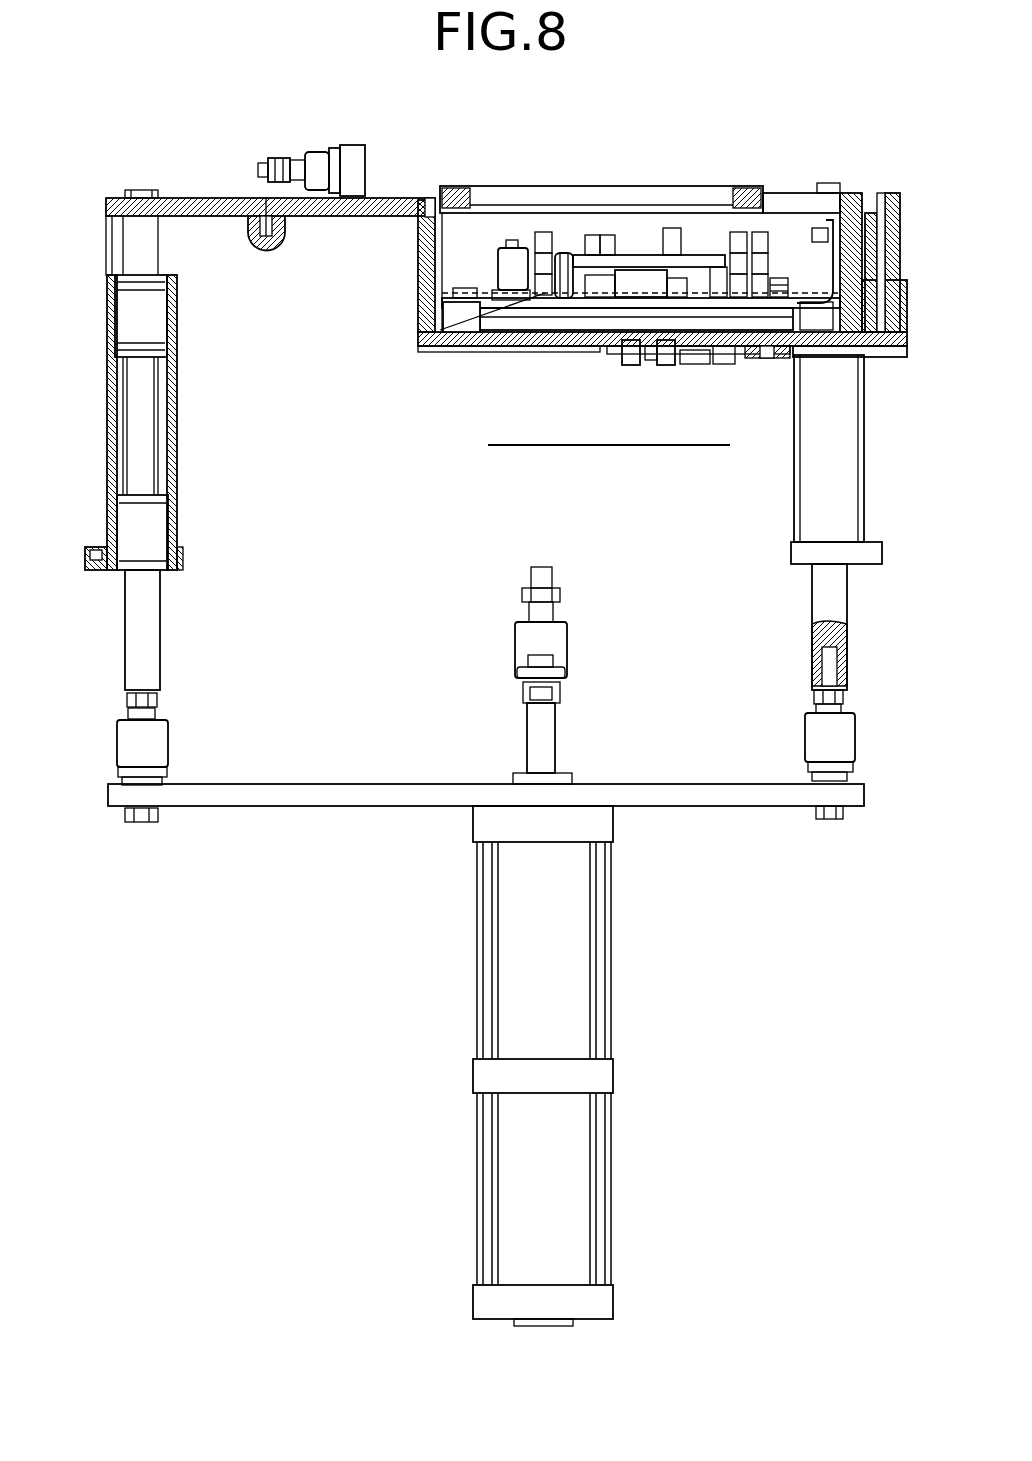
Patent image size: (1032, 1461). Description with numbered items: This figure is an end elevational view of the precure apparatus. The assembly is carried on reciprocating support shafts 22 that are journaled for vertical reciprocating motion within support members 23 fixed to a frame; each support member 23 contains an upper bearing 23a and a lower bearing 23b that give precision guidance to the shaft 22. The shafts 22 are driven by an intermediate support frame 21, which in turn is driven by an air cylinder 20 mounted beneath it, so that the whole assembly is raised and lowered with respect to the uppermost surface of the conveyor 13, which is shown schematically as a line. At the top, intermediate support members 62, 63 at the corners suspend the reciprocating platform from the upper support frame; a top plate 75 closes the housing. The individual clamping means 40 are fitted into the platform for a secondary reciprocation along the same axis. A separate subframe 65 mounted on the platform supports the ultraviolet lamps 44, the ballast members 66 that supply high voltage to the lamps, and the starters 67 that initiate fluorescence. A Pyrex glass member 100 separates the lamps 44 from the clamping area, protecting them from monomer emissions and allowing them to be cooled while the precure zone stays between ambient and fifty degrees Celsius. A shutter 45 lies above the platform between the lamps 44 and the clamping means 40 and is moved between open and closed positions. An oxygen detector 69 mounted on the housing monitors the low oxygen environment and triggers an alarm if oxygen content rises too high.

The conveyor 13 is at (613, 445).
The air cylinder 20 is at (600, 977).
The intermediate support frame 21 is at (312, 790).
The reciprocating support shafts 22 is at (148, 629).
The support members 23 is at (848, 437).
The upper bearing 23a is at (130, 312).
The lower bearing 23b is at (143, 520).
The clamping means 40 is at (697, 362).
The ultraviolet lamps 44 is at (521, 340).
The shutter 45 is at (598, 345).
The intermediate support member 62 is at (418, 240).
The intermediate support member 63 is at (900, 240).
The subframe 65 is at (432, 325).
The ballast members 66 is at (673, 245).
The starters 67 is at (510, 250).
The oxygen detector 69 is at (340, 145).
The top plate 75 is at (598, 195).
The Pyrex glass member 100 is at (772, 360).